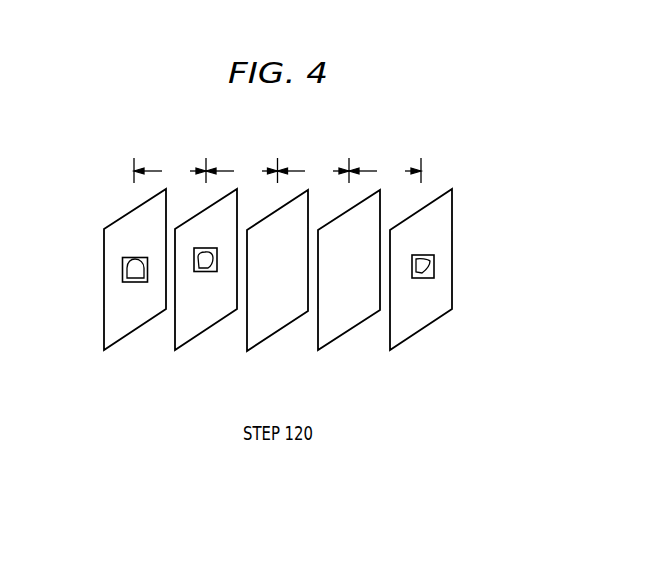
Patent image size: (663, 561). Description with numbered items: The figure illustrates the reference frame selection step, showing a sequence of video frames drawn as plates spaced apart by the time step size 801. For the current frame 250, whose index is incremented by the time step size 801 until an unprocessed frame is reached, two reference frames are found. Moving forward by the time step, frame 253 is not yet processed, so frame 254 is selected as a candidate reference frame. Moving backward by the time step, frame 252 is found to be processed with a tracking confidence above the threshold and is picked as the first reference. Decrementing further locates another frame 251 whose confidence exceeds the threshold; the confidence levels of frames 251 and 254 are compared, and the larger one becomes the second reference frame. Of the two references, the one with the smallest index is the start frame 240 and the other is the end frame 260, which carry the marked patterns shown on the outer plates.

The time step size 801 is at (170, 165).
The start frame 240 is at (152, 318).
The frame 251 is at (113, 345).
The frame 252 is at (198, 337).
The current frame 250 is at (273, 334).
The frame 253 is at (347, 333).
The frame 254 is at (408, 340).
The end frame 260 is at (435, 323).